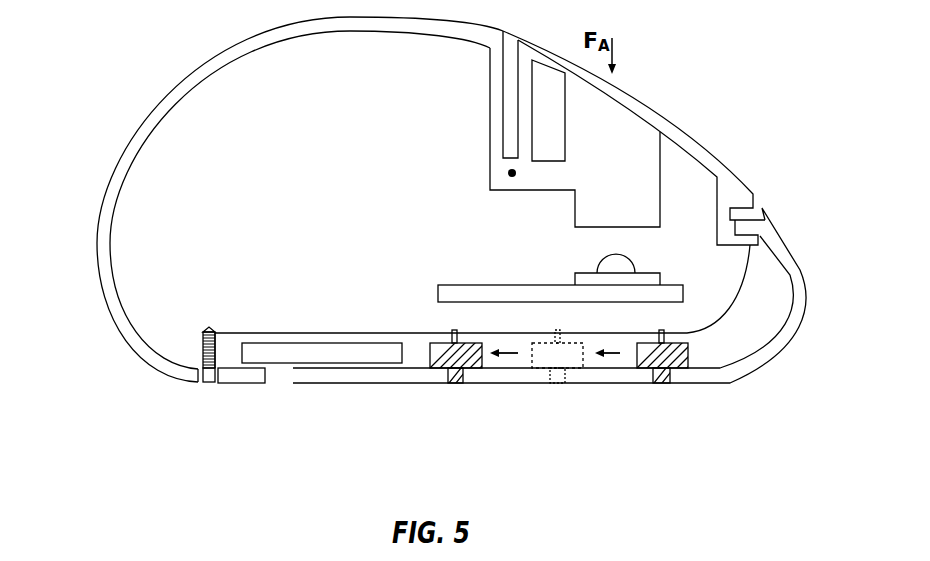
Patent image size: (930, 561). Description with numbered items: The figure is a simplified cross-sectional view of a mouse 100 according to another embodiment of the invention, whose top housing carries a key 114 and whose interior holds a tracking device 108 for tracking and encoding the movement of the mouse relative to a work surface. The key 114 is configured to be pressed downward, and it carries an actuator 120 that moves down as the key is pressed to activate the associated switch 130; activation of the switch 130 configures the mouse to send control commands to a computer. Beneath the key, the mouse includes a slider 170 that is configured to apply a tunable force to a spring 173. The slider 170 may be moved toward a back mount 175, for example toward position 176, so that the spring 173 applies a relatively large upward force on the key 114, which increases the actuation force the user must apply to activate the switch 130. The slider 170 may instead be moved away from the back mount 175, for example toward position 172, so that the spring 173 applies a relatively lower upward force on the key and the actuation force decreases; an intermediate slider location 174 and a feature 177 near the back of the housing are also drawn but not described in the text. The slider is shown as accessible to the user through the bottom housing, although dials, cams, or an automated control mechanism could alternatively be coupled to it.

The mouse 100 is at (110, 56).
The tracking device 108 is at (322, 343).
The key 114 is at (655, 110).
The actuator 120 is at (582, 228).
The switch 130 is at (615, 254).
The slider 170 is at (703, 445).
The position 172 is at (661, 383).
The spring 173 is at (364, 333).
The latch block (moved position) 174 is at (557, 383).
The back mount 175 is at (203, 373).
The position 176 is at (454, 383).
The hook 177 is at (735, 196).